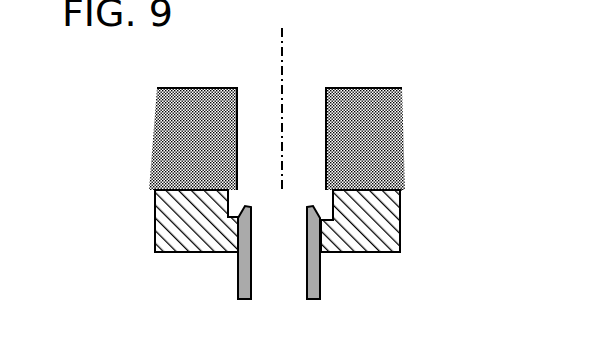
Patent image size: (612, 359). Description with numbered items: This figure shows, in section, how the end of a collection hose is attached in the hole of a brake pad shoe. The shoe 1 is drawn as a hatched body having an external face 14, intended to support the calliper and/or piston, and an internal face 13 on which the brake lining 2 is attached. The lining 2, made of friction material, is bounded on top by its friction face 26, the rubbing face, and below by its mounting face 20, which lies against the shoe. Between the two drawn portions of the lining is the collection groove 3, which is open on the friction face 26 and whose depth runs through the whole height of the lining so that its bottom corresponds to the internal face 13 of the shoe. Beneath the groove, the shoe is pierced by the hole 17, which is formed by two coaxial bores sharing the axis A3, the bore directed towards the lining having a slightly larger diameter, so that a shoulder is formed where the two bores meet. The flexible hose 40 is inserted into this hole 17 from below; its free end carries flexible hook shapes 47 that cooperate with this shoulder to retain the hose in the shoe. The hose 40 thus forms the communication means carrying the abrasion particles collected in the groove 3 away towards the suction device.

The shoe 1 is at (410, 237).
The brake lining 2 is at (418, 118).
The collection groove 3 is at (271, 142).
The internal face 13 is at (377, 202).
The external face 14 is at (365, 252).
The shoe hole 17 is at (295, 218).
The mounting face 20 is at (385, 190).
The friction face 26 is at (360, 88).
The flexible hose 40 is at (230, 294).
The flexible hook shapes 47 is at (238, 212).
The axle of the coaxial bores A3 is at (283, 95).